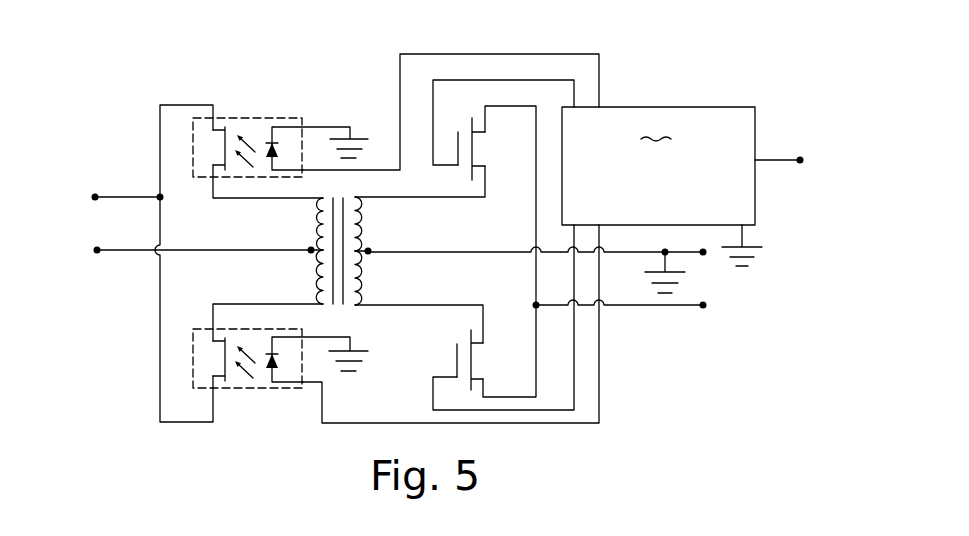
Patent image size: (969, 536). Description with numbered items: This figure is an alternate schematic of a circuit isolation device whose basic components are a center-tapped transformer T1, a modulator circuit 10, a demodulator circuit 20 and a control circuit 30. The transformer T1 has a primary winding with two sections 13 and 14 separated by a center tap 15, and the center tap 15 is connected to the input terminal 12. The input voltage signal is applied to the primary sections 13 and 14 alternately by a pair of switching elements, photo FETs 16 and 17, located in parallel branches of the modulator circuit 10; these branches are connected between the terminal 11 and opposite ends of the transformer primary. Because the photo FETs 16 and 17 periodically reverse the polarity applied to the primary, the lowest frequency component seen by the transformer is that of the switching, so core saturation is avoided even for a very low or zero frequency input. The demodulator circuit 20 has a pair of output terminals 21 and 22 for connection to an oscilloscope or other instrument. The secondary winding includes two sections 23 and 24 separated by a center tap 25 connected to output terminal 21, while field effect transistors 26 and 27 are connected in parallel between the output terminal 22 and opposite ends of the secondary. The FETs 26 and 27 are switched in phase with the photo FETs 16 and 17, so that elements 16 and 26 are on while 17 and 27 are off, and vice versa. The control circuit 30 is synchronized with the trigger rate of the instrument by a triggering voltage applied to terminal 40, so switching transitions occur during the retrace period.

The modulator circuit 10 is at (317, 80).
The terminal 11 is at (97, 192).
The input terminal 12 is at (95, 252).
The primary winding section 13 is at (316, 230).
The primary winding section 14 is at (317, 284).
The center tap 15 is at (309, 249).
The photo FET 16 is at (258, 107).
The photo FET 17 is at (253, 399).
The demodulator circuit 20 is at (569, 34).
The output terminal 21 is at (705, 256).
The output terminal 22 is at (705, 308).
The secondary winding section 23 is at (366, 229).
The secondary winding section 24 is at (366, 273).
The center tap 25 is at (369, 252).
The field effect transistor 26 is at (477, 151).
The field effect transistor 27 is at (480, 362).
The control circuit 30 is at (662, 186).
The terminal 40 is at (802, 152).
The center-tapped transformer T1 is at (350, 317).